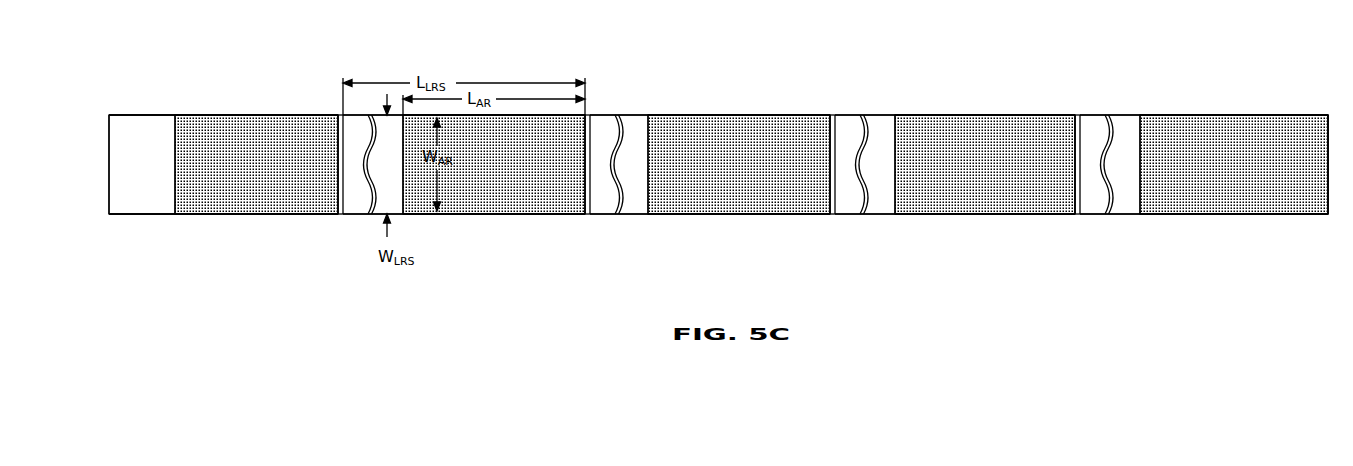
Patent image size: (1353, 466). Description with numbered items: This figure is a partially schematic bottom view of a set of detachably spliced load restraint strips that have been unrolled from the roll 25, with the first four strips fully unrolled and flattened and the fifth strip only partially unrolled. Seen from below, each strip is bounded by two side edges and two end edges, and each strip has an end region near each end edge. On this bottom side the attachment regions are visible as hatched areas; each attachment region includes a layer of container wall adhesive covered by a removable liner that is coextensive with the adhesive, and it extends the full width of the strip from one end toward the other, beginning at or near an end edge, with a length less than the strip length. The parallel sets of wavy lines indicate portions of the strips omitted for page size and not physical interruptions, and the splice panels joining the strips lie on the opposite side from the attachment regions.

The roll 25 is at (133, 228).